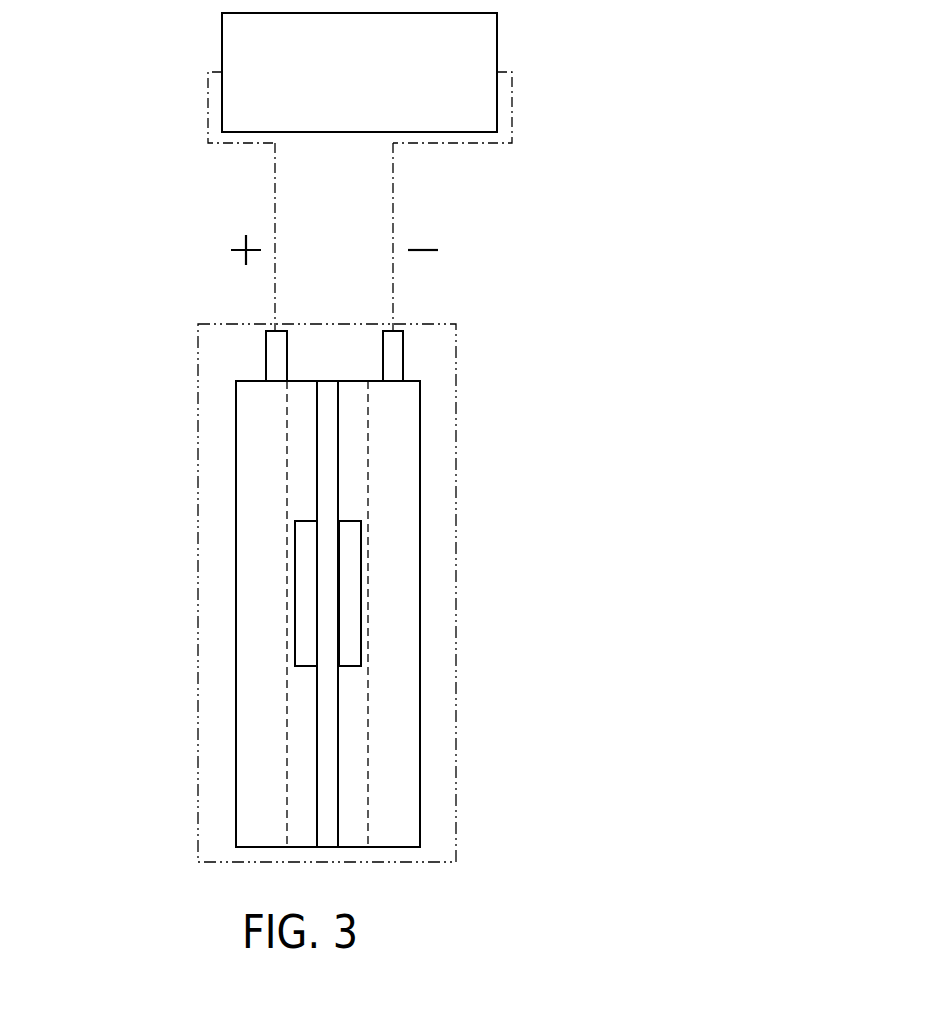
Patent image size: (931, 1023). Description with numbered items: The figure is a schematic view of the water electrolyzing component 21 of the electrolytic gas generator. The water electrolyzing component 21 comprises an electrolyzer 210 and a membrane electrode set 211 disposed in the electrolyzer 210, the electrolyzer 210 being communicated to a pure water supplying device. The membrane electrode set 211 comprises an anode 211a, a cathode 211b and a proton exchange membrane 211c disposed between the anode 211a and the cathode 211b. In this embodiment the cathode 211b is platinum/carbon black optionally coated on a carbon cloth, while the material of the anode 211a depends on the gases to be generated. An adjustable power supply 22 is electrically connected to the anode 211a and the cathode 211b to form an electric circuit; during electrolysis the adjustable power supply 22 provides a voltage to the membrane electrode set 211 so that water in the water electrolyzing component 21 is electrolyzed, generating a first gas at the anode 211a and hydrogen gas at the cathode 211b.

The adjustable power supply 22 is at (487, 40).
The water electrolyzing component 21 is at (80, 323).
The electrolyzer 210 is at (196, 382).
The membrane electrode set 211 is at (287, 438).
The anode 211a is at (302, 553).
The cathode 211b is at (350, 582).
The proton exchange membrane 211c is at (328, 621).